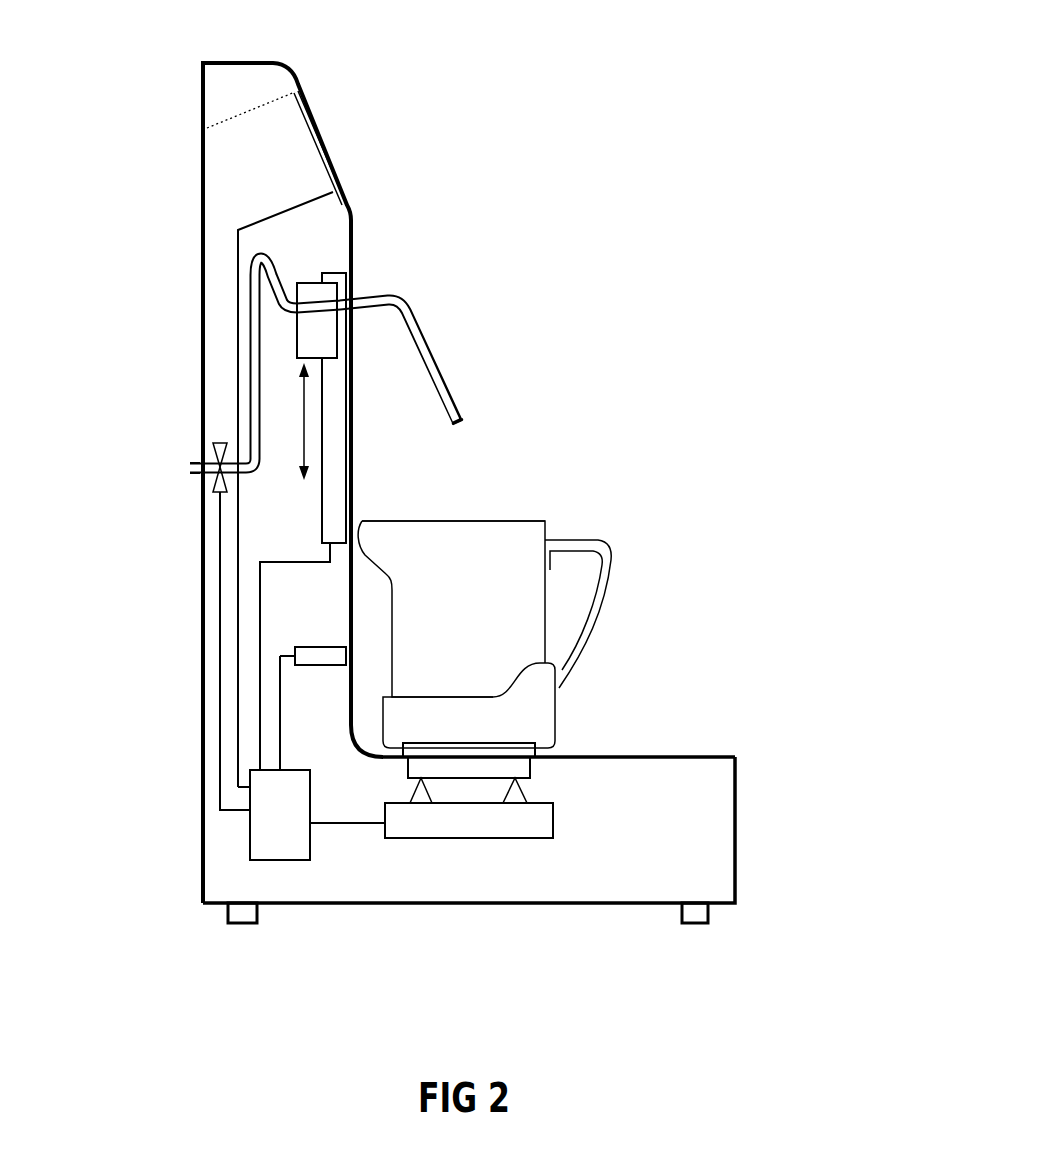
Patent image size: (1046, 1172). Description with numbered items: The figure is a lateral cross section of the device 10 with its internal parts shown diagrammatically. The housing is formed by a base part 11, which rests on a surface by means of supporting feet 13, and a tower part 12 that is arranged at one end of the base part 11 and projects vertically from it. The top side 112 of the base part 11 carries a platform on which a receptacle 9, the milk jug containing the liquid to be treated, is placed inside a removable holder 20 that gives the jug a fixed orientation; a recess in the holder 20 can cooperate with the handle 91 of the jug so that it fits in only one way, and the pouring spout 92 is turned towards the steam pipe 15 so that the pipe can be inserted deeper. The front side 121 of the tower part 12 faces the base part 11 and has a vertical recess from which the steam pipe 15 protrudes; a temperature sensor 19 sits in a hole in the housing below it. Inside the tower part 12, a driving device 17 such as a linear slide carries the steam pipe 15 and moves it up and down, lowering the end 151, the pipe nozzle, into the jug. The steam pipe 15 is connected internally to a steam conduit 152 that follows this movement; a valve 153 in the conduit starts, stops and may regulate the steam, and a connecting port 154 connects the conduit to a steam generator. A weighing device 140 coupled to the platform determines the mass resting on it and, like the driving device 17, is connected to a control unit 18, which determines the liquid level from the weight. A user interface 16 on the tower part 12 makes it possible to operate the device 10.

The device 10 is at (605, 111).
The base part 11 is at (737, 813).
The tower part 12 is at (202, 220).
The supporting feet 13 is at (233, 923).
The steam pipe 15 is at (425, 327).
The user interface 16 is at (308, 107).
The driving device 17 is at (308, 283).
The control unit 18 is at (302, 676).
The temperature sensor 19 is at (317, 665).
The holder 20 is at (555, 707).
The receptacle 9 is at (483, 521).
The handle 91 is at (612, 558).
The pouring spout 92 is at (368, 521).
The top side 112 is at (700, 757).
The front side 121 is at (351, 255).
The weighing device 140 is at (560, 788).
The end of the steam pipe 151 is at (464, 430).
The steam conduit 152 is at (247, 348).
The valve 153 is at (212, 485).
The connecting port 154 is at (190, 467).